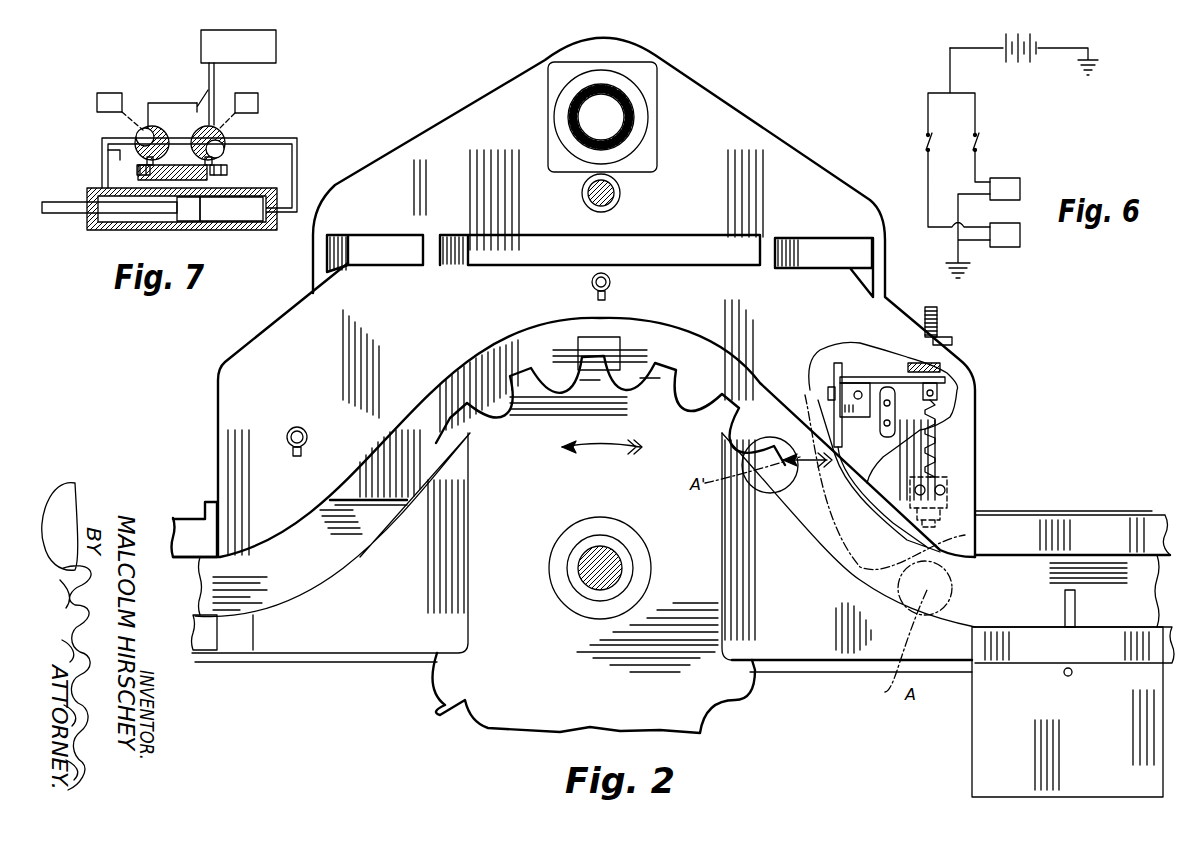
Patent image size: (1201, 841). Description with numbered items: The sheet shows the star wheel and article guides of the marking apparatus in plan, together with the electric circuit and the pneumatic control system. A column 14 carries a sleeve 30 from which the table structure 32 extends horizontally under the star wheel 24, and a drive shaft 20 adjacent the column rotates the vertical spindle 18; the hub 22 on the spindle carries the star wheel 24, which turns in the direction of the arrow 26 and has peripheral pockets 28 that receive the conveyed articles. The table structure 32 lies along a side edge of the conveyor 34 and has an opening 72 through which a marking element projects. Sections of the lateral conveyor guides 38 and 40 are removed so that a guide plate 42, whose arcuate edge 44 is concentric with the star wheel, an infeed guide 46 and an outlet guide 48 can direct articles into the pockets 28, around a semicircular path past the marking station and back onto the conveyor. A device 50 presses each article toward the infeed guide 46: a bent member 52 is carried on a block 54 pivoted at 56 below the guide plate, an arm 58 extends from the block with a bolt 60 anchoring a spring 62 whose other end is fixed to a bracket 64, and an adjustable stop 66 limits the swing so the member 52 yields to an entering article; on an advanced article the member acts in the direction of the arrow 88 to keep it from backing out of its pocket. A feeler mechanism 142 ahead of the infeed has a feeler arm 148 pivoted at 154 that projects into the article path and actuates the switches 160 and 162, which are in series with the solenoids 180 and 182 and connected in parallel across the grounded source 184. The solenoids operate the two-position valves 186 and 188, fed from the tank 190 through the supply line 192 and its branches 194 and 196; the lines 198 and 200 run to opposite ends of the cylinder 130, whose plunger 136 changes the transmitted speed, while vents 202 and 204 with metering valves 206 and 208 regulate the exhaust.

In FIG. 2, the upstanding column 14 is at (627, 102).
In FIG. 2, the sleeve 30 is at (640, 120).
In FIG. 2, the drive shaft 20 is at (590, 206).
In FIG. 2, the table structure 32 is at (413, 148).
In FIG. 2, the guide plate 42 is at (296, 323).
In FIG. 2, the conveyor 34 is at (252, 605).
In FIG. 2, the outlet guide 48 is at (330, 642).
In FIG. 2, the infeed guide 46 is at (828, 650).
In FIG. 2, the lateral conveyor guide 40 is at (197, 652).
In FIG. 2, the lateral conveyor guide 38 is at (186, 520).
In FIG. 2, the vertical spindle 18 is at (577, 575).
In FIG. 2, the hub 22 is at (580, 607).
In FIG. 2, the star wheel 24 is at (487, 703).
In FIG. 2, the pockets 28 is at (458, 414).
In FIG. 2, the arcuate edge 44 is at (532, 336).
In FIG. 2, the opening 72 is at (613, 343).
In FIG. 2, the arrow 26 is at (602, 456).
In FIG. 2, the arrow 88 is at (788, 440).
In FIG. 2, the feeler mechanism 142 is at (993, 731).
In FIG. 2, the feeler arm 148 is at (1076, 610).
In FIG. 2, the pivot 154 is at (1073, 672).
In FIG. 2, the device 50 is at (964, 361).
In FIG. 2, the bolt 60 is at (940, 318).
In FIG. 2, the arm 58 is at (880, 372).
In FIG. 2, the block 54 is at (852, 392).
In FIG. 2, the pivot 56 is at (830, 387).
In FIG. 2, the adjustable stop 66 is at (880, 430).
In FIG. 2, the spring 62 is at (935, 402).
In FIG. 2, the bracket 64 is at (950, 478).
In FIG. 2, the bent member 52 is at (862, 495).
In FIG. 7, the tank 190 is at (278, 45).
In FIG. 7, the supply line 192 is at (212, 83).
In FIG. 7, the branch 194 is at (200, 100).
In FIG. 7, the branch 196 is at (160, 103).
In FIG. 7, the two-position valve 188 is at (162, 135).
In FIG. 7, the two-position valve 186 is at (225, 133).
In FIG. 7, the solenoid 182 is at (105, 90).
In FIG. 6, the solenoid 182 is at (1020, 181).
In FIG. 7, the solenoid 180 is at (258, 95).
In FIG. 6, the solenoid 180 is at (1020, 237).
In FIG. 7, the line 198 is at (297, 168).
In FIG. 7, the line 200 is at (102, 151).
In FIG. 7, the vent 204 is at (142, 166).
In FIG. 7, the adjustable metering valve 206 is at (227, 170).
In FIG. 7, the vent 202 is at (220, 160).
In FIG. 7, the adjustable metering valve 208 is at (137, 170).
In FIG. 7, the pneumatically operated cylinder 130 is at (220, 230).
In FIG. 7, the plunger 136 is at (70, 212).
In FIG. 6, the source of electric current 184 is at (1018, 62).
In FIG. 6, the switch 160 is at (926, 142).
In FIG. 6, the switch 162 is at (979, 140).